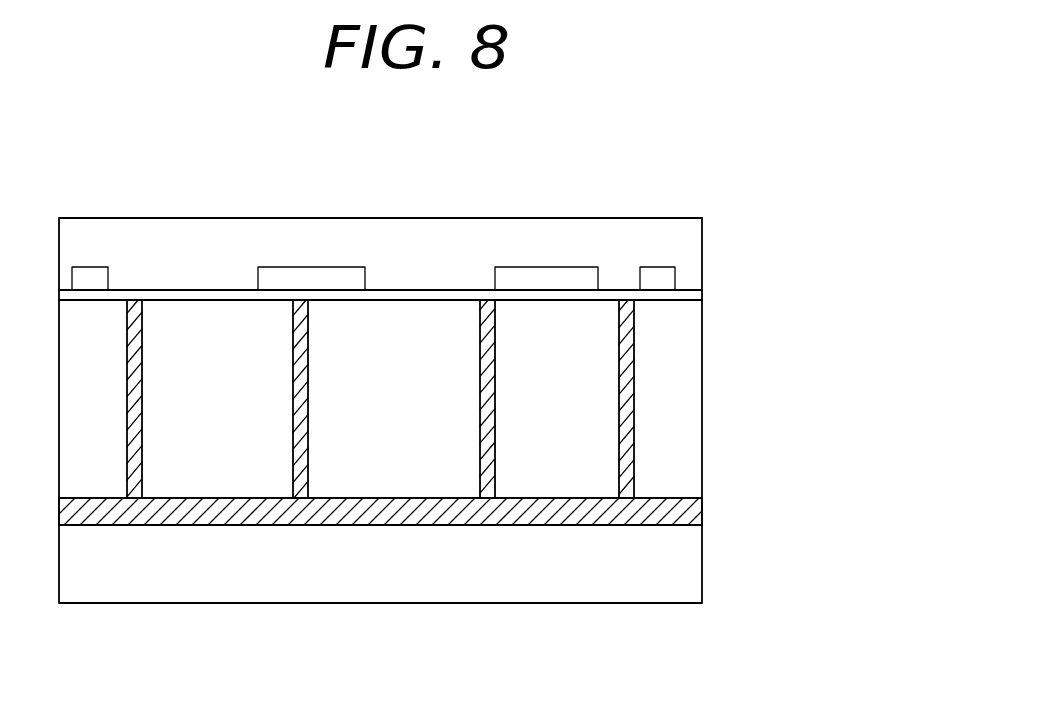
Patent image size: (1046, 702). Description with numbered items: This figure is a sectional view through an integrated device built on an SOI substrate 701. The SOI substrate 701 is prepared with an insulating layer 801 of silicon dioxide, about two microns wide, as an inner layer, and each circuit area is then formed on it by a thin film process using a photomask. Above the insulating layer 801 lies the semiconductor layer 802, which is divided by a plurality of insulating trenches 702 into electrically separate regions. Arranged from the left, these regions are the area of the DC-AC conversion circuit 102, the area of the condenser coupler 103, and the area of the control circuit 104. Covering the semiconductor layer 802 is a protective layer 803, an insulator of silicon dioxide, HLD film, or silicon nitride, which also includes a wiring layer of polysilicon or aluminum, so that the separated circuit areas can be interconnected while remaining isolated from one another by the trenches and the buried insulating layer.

The SOI substrate 701 is at (262, 218).
The insulating trench 702 is at (619, 460).
The DC-AC conversion circuit 102 is at (218, 415).
The condenser coupler 103 is at (395, 412).
The control circuit 104 is at (561, 414).
The insulating layer 801 is at (690, 507).
The semiconductor layer 802 is at (680, 387).
The protective layer 803 is at (687, 247).